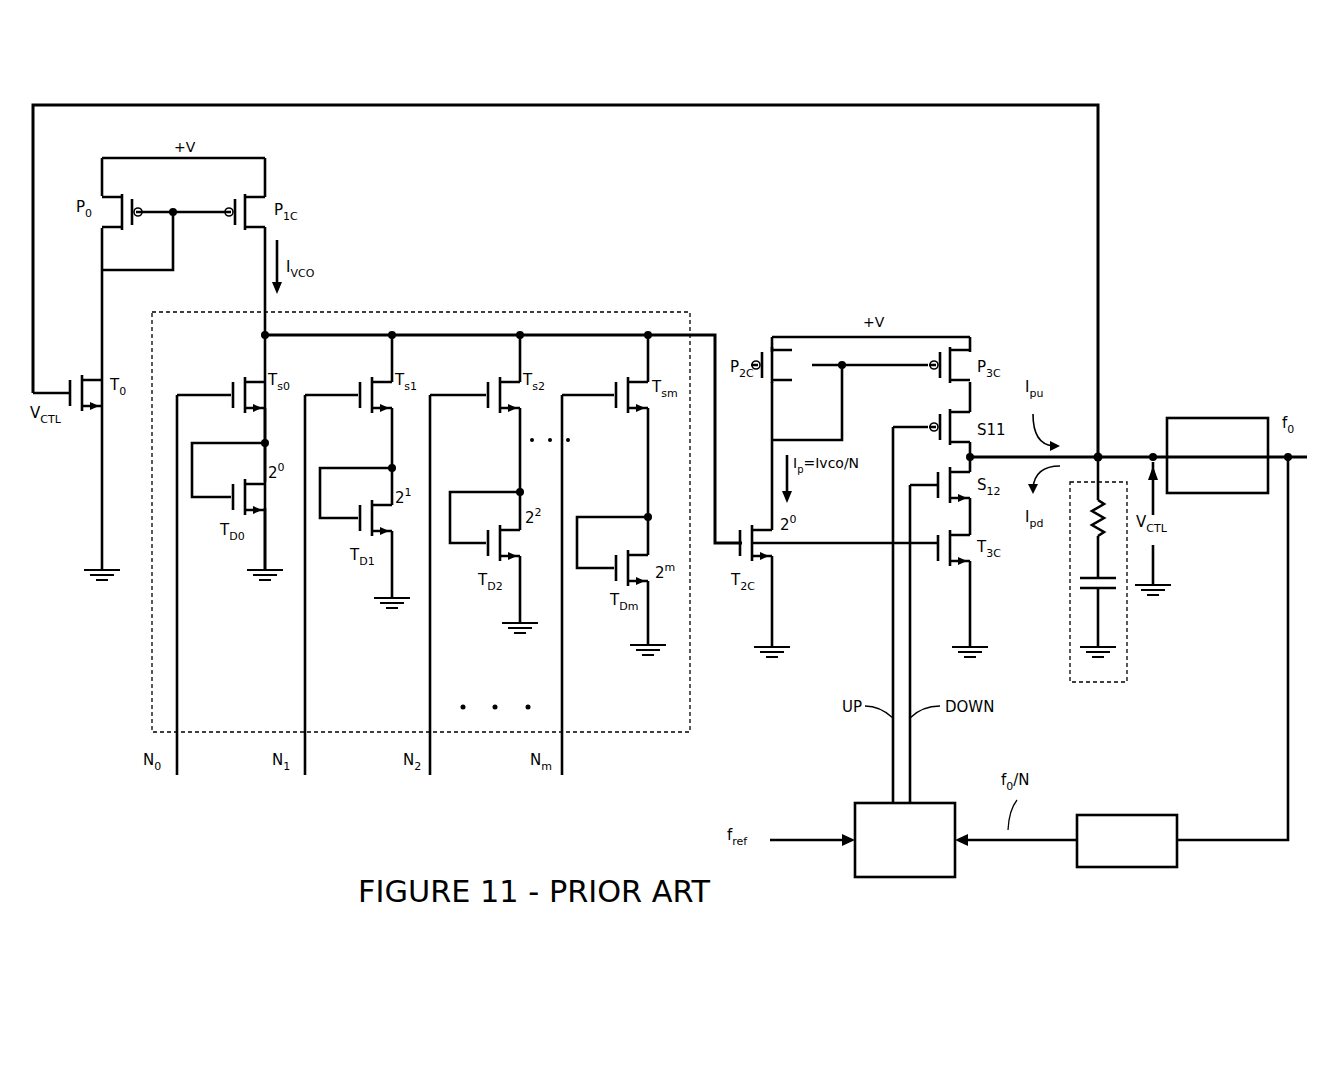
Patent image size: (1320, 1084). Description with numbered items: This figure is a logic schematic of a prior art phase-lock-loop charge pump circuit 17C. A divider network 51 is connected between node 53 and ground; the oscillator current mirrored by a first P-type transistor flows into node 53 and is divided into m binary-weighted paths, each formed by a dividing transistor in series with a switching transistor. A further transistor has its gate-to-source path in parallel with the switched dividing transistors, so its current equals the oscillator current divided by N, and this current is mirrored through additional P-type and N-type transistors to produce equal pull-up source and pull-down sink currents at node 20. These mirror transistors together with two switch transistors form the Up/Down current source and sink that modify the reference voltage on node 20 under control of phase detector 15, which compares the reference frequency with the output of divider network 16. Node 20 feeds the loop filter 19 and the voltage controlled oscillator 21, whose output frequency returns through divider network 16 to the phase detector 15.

The charge pump circuit 17C is at (693, 176).
The divider network 51 is at (391, 312).
The node 53 is at (264, 335).
The phase detector 15 is at (864, 803).
The divider network 16 is at (1135, 815).
The loop filter 19 is at (1127, 627).
The node 20 is at (1100, 455).
The voltage controlled oscillator 21 is at (1206, 418).